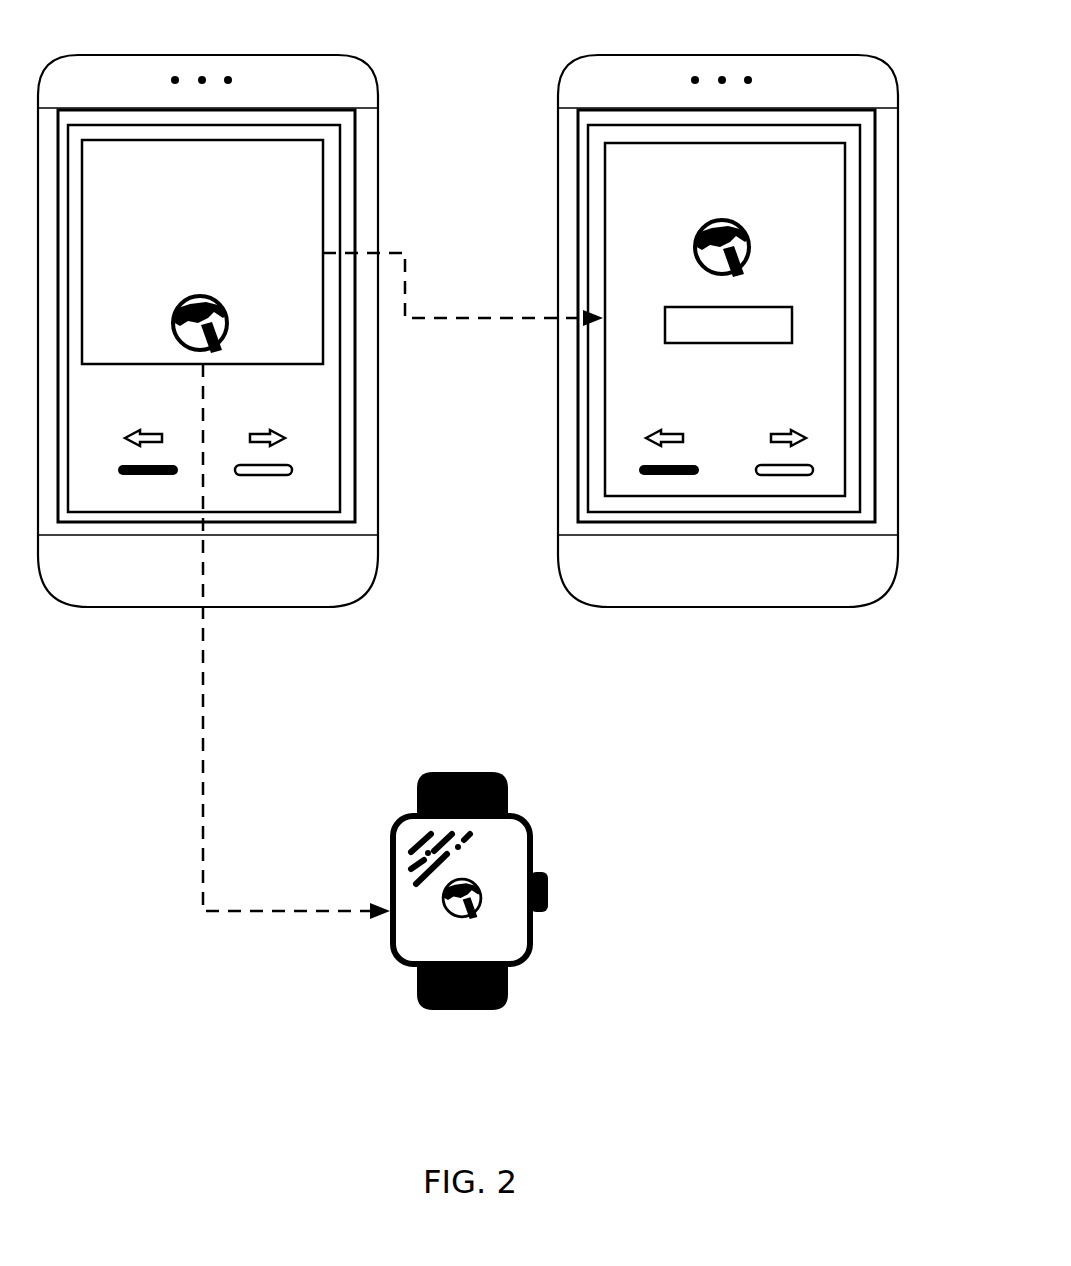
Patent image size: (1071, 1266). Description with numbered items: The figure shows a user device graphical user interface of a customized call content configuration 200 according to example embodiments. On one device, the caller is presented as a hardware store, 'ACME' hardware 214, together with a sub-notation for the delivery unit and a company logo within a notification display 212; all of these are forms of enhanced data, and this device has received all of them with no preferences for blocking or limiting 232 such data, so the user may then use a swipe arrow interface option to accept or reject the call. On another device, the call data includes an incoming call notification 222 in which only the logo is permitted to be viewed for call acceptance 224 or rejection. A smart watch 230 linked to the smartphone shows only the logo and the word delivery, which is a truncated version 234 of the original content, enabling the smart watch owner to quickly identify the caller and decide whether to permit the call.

The communication system environment 200 is at (78, 24).
The notification display 212 is at (313, 167).
The 'ACME' hardware 214 is at (158, 165).
The incoming call notification 222 is at (795, 160).
The call acceptance 224 is at (787, 325).
The smart watch 230 is at (527, 817).
The blocking or limiting 232 is at (463, 339).
The truncated version 234 is at (296, 641).